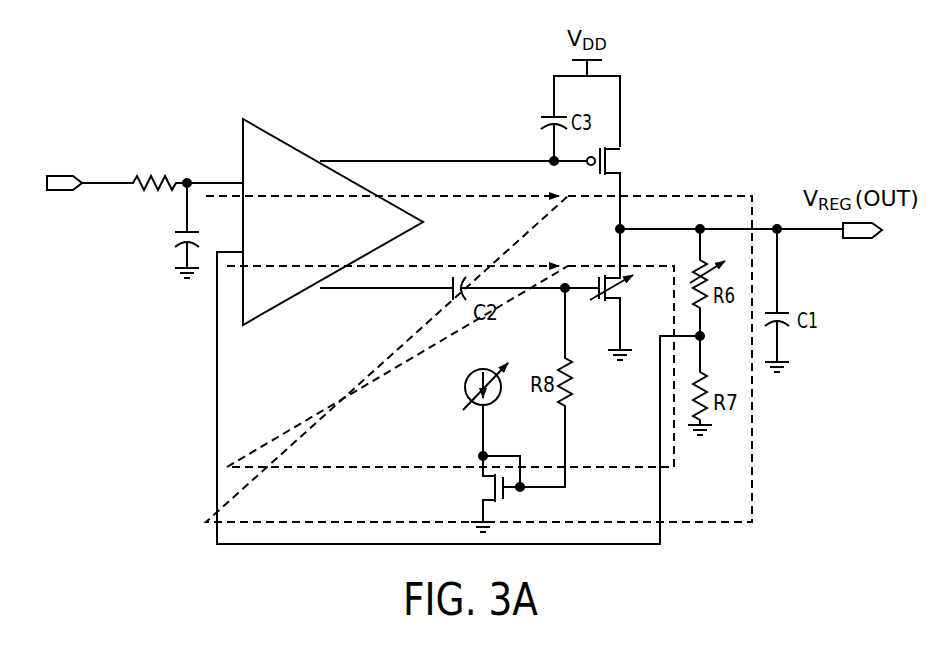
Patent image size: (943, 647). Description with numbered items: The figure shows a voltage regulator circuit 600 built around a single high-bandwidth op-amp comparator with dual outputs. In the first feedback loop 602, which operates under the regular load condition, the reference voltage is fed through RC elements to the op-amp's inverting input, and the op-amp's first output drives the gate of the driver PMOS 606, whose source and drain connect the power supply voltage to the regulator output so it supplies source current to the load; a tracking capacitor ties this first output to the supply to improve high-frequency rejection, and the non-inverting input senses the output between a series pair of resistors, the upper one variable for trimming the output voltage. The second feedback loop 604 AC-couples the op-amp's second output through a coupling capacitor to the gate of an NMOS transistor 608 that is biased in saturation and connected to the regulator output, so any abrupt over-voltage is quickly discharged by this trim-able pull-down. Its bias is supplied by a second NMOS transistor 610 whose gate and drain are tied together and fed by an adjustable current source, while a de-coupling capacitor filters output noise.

The voltage regulator circuit 600 is at (160, 102).
The first feedback loop 602 is at (448, 197).
The second feedback loop 604 is at (505, 266).
The driver PMOS 606 is at (623, 160).
The NMOS transistor 608 is at (626, 292).
The second NMOS transistor 610 is at (488, 488).